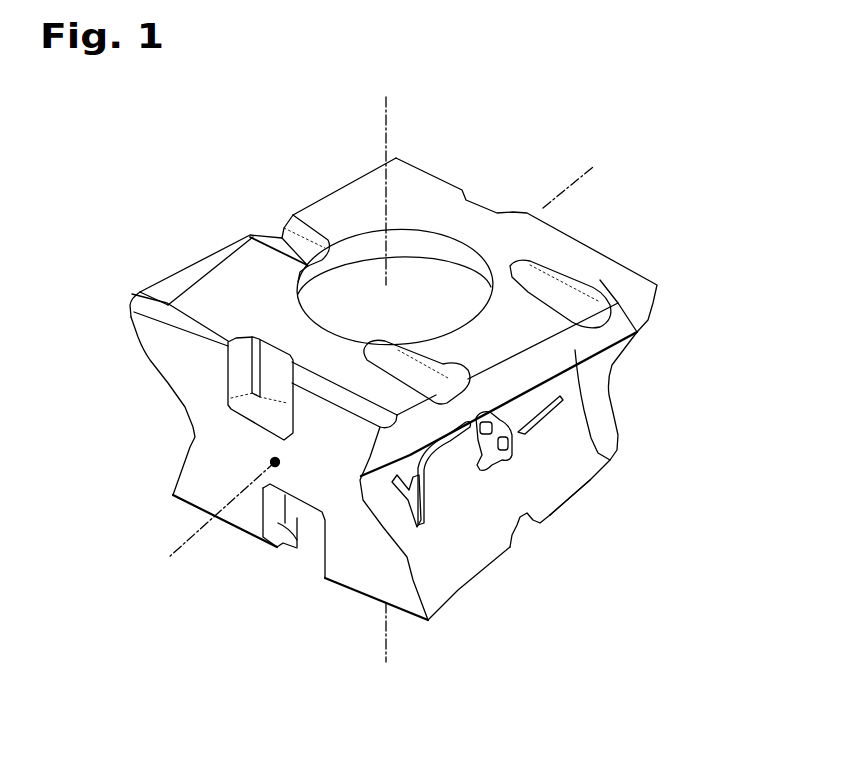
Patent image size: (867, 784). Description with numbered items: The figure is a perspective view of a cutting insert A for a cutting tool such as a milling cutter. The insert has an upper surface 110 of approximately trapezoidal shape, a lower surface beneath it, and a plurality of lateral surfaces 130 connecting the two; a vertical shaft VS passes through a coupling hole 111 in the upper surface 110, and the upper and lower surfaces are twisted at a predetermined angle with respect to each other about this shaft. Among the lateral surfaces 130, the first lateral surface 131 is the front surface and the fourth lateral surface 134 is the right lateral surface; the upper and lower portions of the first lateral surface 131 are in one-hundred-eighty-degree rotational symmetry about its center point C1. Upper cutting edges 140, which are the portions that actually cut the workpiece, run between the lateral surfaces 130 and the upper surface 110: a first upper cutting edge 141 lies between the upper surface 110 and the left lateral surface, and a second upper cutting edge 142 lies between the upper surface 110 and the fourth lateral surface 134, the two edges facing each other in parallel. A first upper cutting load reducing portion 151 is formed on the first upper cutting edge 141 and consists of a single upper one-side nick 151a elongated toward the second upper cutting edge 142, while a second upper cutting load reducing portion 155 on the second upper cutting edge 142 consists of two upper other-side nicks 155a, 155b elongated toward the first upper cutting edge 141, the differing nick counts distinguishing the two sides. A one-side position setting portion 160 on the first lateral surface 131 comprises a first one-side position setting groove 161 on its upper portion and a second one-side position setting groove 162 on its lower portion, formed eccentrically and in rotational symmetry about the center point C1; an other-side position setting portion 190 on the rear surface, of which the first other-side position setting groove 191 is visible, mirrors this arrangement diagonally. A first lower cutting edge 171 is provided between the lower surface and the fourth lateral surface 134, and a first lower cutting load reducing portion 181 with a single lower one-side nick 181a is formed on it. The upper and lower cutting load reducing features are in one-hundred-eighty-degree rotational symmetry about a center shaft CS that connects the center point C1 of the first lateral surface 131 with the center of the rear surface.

The upper surface 110 is at (447, 190).
The coupling hole 111 is at (427, 270).
The lateral surfaces 130 is at (288, 503).
The first lateral surface 131 is at (188, 468).
The fourth lateral surface 134 is at (443, 483).
The upper cutting edges 140 is at (428, 317).
The first upper cutting edge 141 is at (317, 193).
The second upper cutting edge 142 is at (610, 460).
The first upper cutting load reducing portion 151 is at (236, 221).
The upper one-side nick 151a is at (283, 232).
The second upper cutting load reducing portion 155 is at (552, 433).
The upper other-side nick 155a is at (612, 310).
The upper other-side nick 155b is at (517, 435).
The one-side position setting portion 160 is at (192, 498).
The first one-side position setting groove 161 is at (247, 370).
The second one-side position setting groove 162 is at (297, 548).
The first lower cutting edge 171 is at (552, 515).
The first lower cutting load reducing portion 181 is at (557, 582).
The lower one-side nick 181a is at (527, 535).
The other-side position setting portion 190 is at (564, 166).
The first other-side position setting groove 191 is at (510, 207).
The center point C1 is at (273, 458).
The cutting insert A is at (621, 214).
The vertical shaft VS is at (384, 117).
The center shaft CS is at (180, 550).